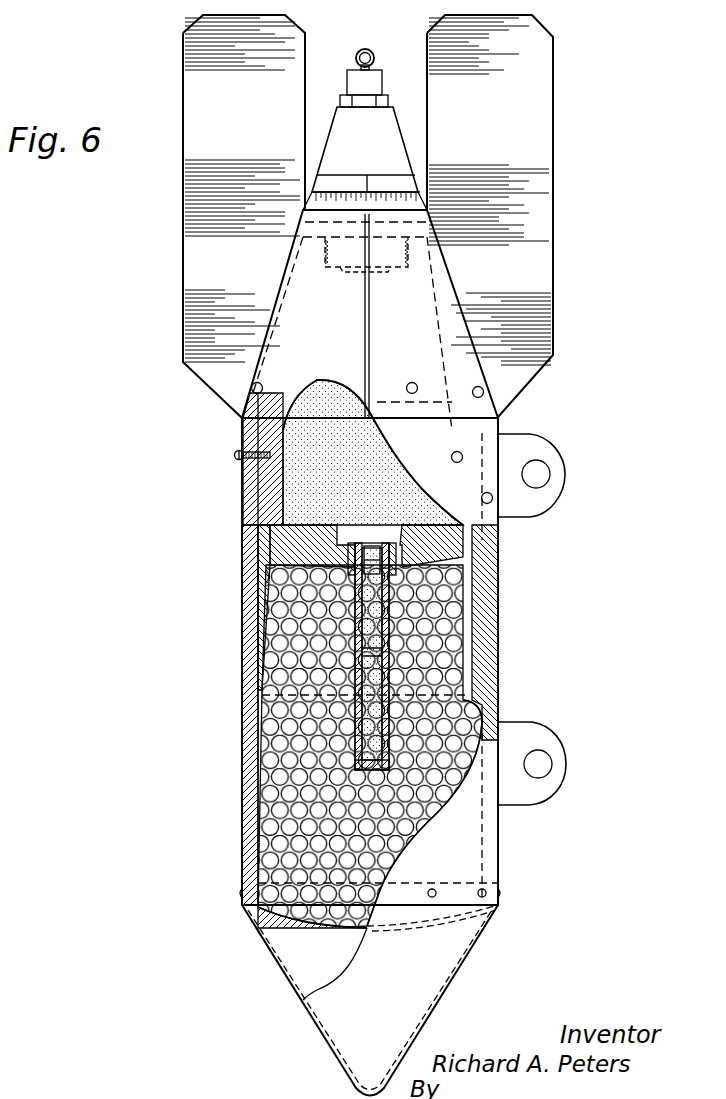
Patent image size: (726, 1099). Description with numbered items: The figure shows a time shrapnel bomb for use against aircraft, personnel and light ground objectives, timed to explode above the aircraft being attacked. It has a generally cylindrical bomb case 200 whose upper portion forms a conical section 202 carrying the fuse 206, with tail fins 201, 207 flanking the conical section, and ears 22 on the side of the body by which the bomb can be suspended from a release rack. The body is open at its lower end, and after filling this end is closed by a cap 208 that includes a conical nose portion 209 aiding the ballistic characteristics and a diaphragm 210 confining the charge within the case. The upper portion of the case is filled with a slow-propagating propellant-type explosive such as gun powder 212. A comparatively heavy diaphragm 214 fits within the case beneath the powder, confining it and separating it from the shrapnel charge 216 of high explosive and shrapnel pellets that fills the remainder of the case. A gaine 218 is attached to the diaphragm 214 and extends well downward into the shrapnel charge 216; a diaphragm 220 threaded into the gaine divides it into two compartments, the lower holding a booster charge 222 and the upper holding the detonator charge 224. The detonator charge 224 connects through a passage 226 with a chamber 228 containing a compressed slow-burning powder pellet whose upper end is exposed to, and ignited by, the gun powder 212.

The ears 22 is at (552, 457).
The bomb case 200 is at (497, 672).
The tail fin 201 is at (553, 223).
The conical section 202 is at (462, 362).
The fuse 206 is at (394, 148).
The tail fin 207 is at (192, 249).
The cap 208 is at (483, 963).
The conical nose portion 209 is at (448, 998).
The diaphragm 210 is at (323, 912).
The gun powder 212 is at (305, 497).
The diaphragm 214 is at (283, 546).
The shrapnel charge 216 is at (280, 788).
The gaine 218 is at (470, 607).
The diaphragm 220 is at (262, 694).
The booster charge 222 is at (368, 727).
The detonator charge 224 is at (368, 603).
The passage 226 is at (378, 582).
The chamber 228 is at (375, 553).